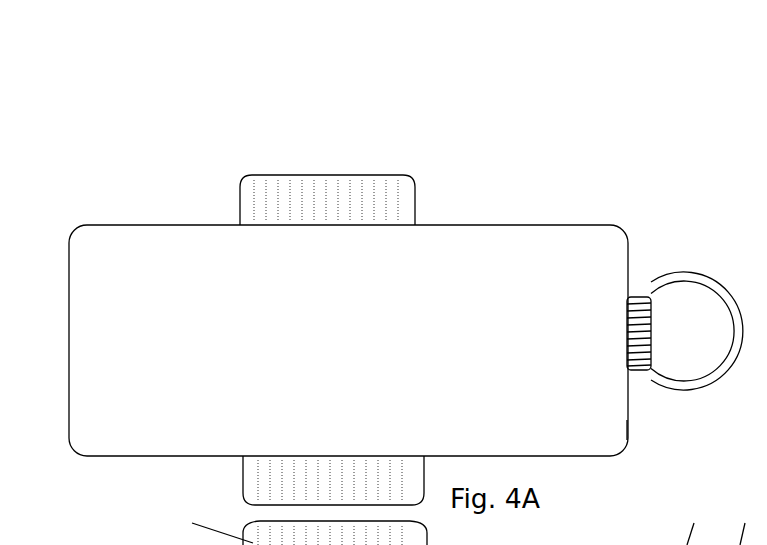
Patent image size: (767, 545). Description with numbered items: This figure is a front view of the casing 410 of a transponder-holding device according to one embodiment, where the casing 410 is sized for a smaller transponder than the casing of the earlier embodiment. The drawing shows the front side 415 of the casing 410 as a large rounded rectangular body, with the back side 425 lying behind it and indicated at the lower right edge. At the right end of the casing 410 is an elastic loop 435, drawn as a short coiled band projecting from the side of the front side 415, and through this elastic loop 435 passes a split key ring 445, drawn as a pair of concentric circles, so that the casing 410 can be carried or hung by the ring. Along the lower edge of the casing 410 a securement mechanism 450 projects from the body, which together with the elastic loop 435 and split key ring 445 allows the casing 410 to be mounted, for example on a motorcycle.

The casing 410 is at (662, 168).
The front side 415 is at (570, 425).
The back side 425 is at (643, 527).
The elastic loop 435 is at (636, 371).
The split key ring 445 is at (719, 382).
The securement mechanism 450 is at (263, 473).